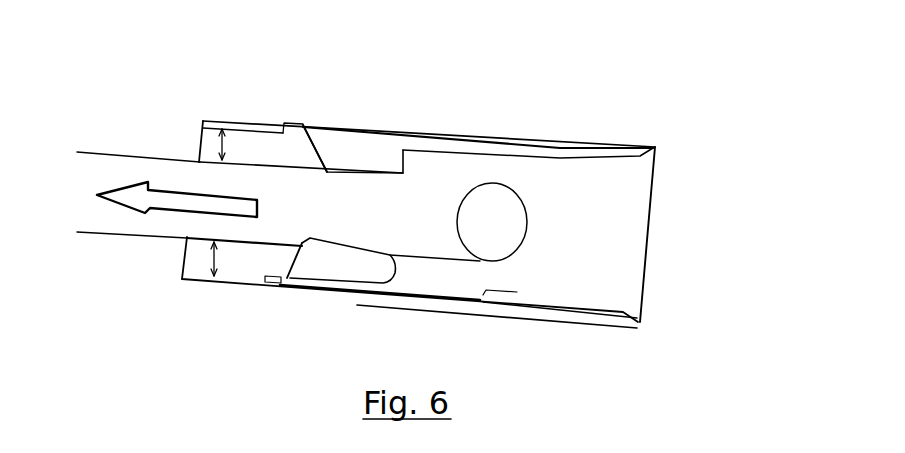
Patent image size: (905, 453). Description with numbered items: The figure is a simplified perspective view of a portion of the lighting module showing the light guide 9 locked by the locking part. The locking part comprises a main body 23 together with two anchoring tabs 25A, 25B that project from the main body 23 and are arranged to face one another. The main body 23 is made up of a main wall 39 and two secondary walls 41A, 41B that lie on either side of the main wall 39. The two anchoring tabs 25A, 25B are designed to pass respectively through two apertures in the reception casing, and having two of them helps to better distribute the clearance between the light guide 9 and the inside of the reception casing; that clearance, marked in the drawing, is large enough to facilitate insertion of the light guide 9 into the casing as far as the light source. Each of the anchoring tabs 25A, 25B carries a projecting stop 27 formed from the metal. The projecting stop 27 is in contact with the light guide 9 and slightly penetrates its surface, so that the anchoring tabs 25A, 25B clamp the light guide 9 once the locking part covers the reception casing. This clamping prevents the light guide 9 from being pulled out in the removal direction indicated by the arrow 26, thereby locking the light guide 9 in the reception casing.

The main body 23 is at (502, 221).
The anchoring tab 25A is at (347, 154).
The anchoring tab 25B is at (337, 268).
The projecting stop 27 is at (300, 147).
The arrow 26 is at (157, 202).
The light guide 9 is at (487, 219).
The main wall 39 is at (650, 238).
The secondary wall 41A is at (656, 146).
The secondary wall 41B is at (640, 318).